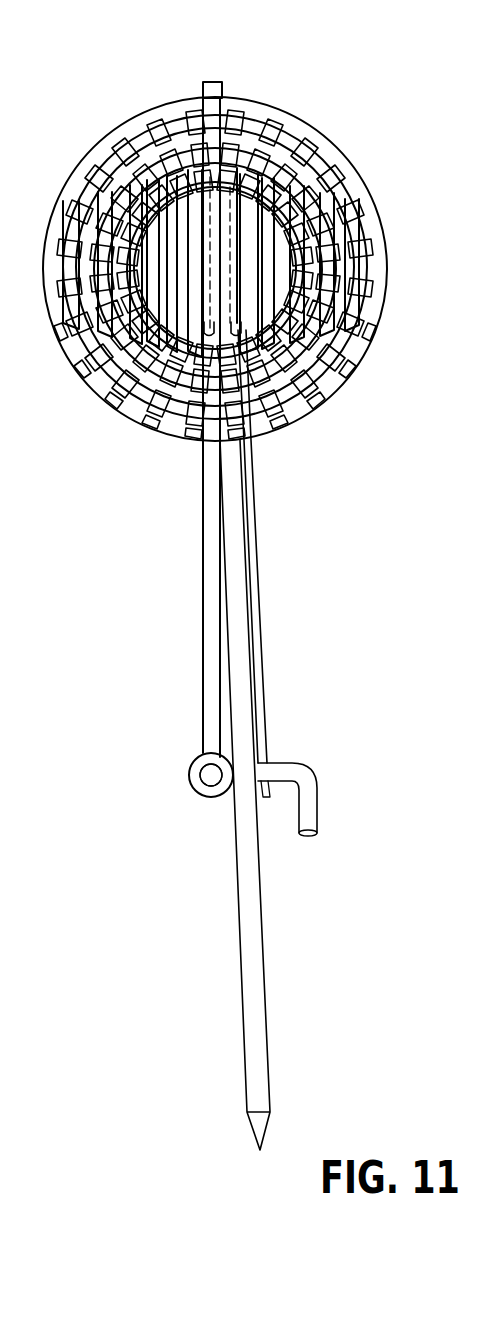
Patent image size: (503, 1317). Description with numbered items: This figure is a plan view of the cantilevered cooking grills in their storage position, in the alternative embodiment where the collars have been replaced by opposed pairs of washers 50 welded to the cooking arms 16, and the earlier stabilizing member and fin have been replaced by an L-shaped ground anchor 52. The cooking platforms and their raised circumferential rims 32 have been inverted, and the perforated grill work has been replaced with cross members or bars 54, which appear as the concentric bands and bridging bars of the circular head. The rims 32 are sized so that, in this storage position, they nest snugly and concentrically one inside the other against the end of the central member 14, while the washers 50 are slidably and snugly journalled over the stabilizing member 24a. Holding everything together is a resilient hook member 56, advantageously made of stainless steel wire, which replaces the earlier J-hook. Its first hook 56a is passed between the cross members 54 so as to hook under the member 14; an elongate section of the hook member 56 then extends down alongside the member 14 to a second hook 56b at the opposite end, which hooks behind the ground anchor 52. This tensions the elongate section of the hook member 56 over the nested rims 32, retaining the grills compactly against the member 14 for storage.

The member 14 is at (268, 985).
The cooking arms 16 is at (205, 625).
The stabilizing member 24a is at (207, 775).
The raised circumferential rims 32 is at (315, 250).
The washers 50 is at (197, 795).
The L-shaped ground anchor 52 is at (310, 775).
The cross members 54 is at (255, 122).
The resilient hook member 56 is at (268, 641).
The first hook 56a is at (240, 323).
The second hook 56b is at (272, 797).